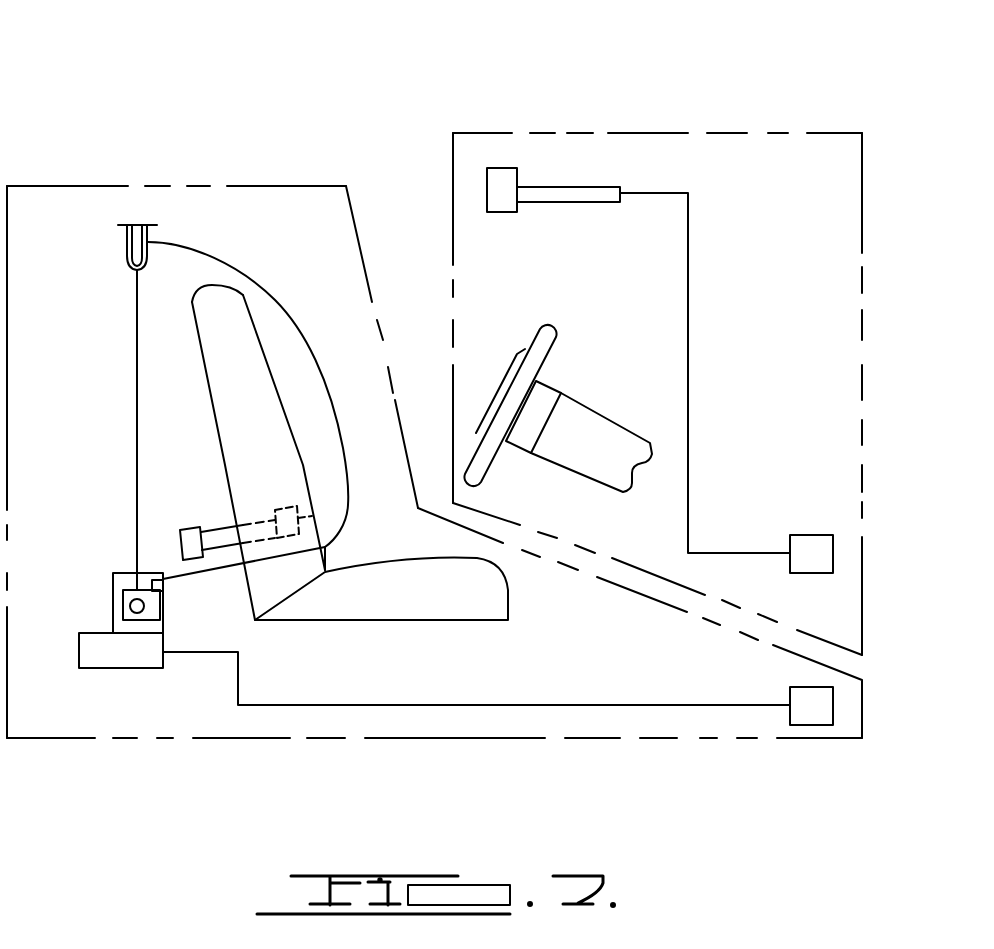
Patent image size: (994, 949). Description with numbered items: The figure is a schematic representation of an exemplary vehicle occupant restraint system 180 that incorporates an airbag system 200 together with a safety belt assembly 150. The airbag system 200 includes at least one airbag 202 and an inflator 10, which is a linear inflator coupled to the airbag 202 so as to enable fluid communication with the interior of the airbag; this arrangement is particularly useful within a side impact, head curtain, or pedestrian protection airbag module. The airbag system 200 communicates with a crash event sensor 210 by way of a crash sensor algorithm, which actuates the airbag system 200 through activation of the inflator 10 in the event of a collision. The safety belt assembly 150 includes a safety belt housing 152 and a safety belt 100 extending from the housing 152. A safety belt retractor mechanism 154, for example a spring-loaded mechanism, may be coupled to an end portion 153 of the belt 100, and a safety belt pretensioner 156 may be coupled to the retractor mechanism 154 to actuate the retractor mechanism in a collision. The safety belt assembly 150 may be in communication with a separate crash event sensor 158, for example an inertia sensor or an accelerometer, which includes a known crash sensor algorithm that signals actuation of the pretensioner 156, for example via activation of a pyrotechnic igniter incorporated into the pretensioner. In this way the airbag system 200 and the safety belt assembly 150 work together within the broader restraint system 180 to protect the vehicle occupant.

The vehicle occupant restraint system 180 is at (150, 137).
The safety belt assembly 150 is at (357, 738).
The airbag system 200 is at (692, 133).
The safety belt 100 is at (292, 308).
The end portion 153 is at (150, 547).
The safety belt retractor mechanism 154 is at (122, 578).
The safety belt housing 152 is at (127, 613).
The safety belt pretensioner 156 is at (135, 655).
The crash event sensor 158 is at (800, 690).
The crash event sensor 210 is at (810, 542).
The airbag 202 is at (497, 187).
The inflator 10 is at (575, 197).